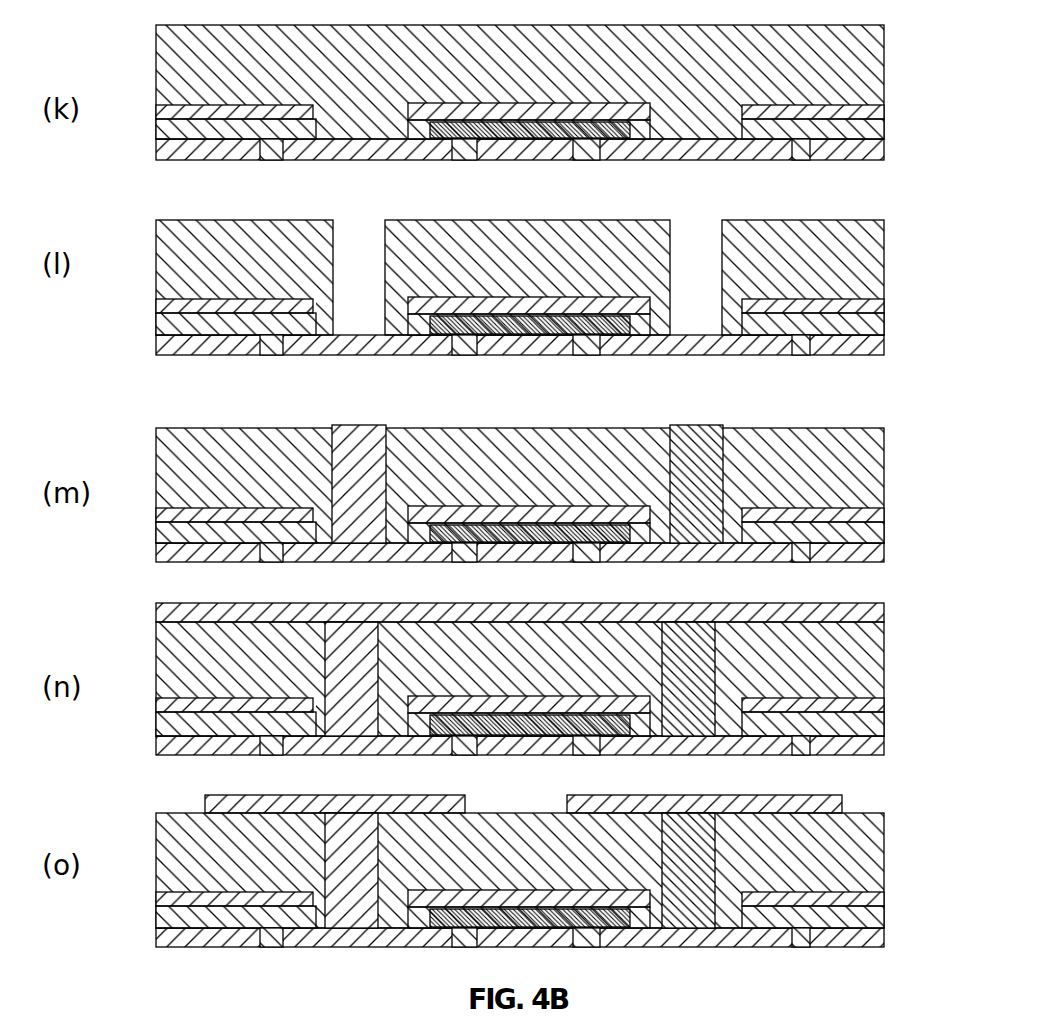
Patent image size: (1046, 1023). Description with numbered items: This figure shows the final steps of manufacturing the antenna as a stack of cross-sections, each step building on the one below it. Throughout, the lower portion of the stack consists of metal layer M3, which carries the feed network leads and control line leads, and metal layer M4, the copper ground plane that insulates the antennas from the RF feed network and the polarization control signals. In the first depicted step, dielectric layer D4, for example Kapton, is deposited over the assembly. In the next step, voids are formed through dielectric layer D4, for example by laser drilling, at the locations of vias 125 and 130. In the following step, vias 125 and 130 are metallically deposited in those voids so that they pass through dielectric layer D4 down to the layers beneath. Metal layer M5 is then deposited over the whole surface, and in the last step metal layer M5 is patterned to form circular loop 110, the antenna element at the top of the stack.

The dielectric layer D4 is at (884, 42).
The metal layer M4 is at (884, 108).
The metal layer M3 is at (884, 154).
The metal layer M5 is at (884, 608).
The via 125 is at (357, 428).
The via 130 is at (700, 428).
The circular loop 110 is at (206, 812).